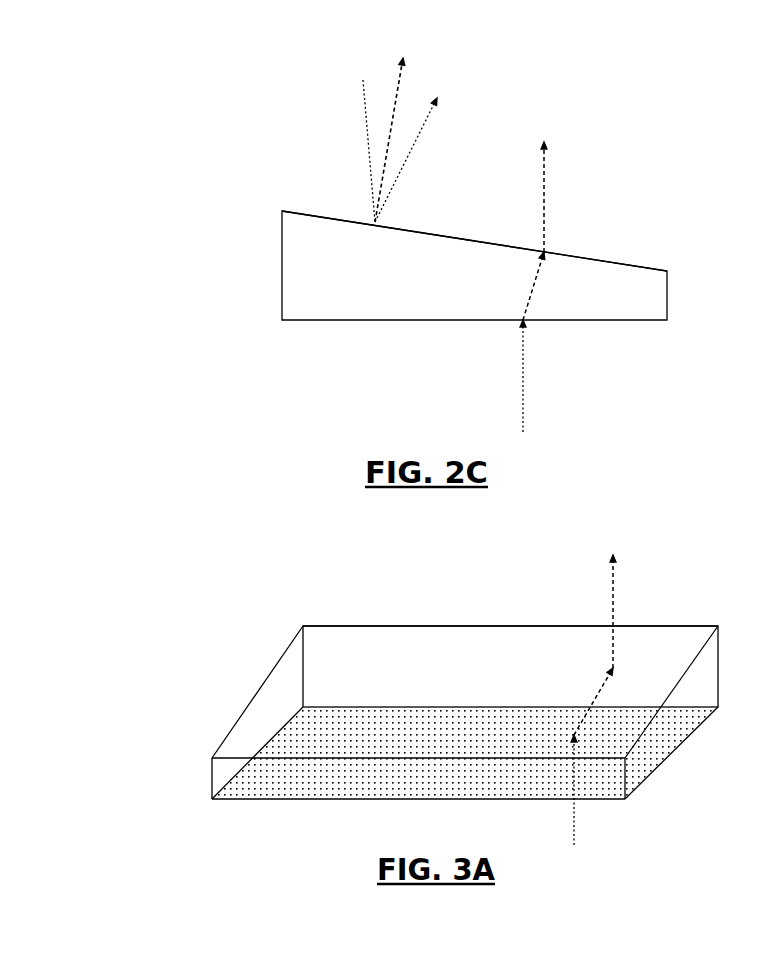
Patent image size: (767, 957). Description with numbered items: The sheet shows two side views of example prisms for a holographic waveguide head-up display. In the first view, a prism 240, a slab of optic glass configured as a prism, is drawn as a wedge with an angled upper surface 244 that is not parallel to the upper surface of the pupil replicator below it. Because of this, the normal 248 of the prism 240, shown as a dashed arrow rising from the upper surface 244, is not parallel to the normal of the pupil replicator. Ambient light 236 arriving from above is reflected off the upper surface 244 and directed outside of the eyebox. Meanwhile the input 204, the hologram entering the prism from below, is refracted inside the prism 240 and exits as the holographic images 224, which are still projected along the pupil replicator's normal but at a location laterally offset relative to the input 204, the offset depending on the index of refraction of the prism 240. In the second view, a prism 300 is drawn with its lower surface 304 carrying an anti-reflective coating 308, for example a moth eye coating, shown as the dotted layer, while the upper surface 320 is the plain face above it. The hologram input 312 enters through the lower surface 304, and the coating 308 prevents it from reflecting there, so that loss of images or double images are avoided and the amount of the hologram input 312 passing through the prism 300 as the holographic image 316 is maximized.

In FIG. 2C, the input 204 is at (523, 380).
In FIG. 2C, the holographic images 224 is at (544, 192).
In FIG. 2C, the ambient light 236 is at (367, 128).
In FIG. 2C, the prism 240 is at (282, 281).
In FIG. 2C, the upper surface of the prism 244 is at (303, 213).
In FIG. 2C, the normal of the prism 248 is at (399, 92).
In FIG. 3A, the prism 300 is at (221, 655).
In FIG. 3A, the lower surface of the prism 304 is at (268, 800).
In FIG. 3A, the anti-reflective coating 308 is at (667, 737).
In FIG. 3A, the hologram input 312 is at (574, 828).
In FIG. 3A, the holographic image 316 is at (613, 585).
In FIG. 3A, the upper surface of the prism 320 is at (342, 625).